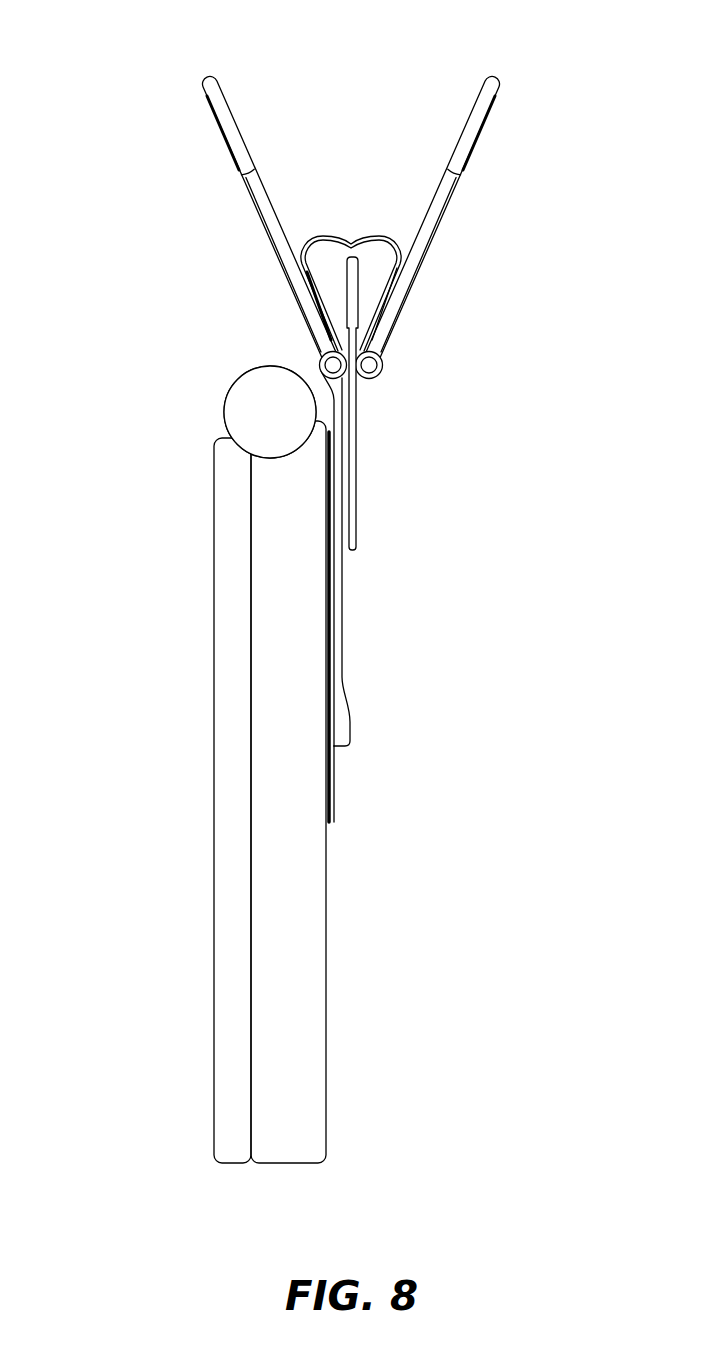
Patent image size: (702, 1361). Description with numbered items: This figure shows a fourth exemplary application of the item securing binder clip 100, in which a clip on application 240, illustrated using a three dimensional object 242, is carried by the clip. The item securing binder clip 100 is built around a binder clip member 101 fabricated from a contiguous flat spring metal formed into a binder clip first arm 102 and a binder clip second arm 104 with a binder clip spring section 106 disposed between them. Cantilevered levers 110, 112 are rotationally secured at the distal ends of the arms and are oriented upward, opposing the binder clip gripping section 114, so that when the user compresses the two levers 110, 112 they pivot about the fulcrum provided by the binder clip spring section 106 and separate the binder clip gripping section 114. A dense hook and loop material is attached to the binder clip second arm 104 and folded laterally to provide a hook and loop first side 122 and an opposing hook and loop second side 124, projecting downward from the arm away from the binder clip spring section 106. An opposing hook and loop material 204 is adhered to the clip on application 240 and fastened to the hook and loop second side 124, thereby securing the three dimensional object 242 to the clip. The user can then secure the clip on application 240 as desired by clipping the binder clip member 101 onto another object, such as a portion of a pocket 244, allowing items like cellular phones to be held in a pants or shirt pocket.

The item securing binder clip 100 is at (441, 97).
The binder clip member 101 is at (462, 218).
The binder clip first arm 102 is at (388, 308).
The binder clip second arm 104 is at (310, 313).
The binder clip spring section 106 is at (353, 232).
The cantilevered lever 110 is at (470, 140).
The cantilevered lever 112 is at (232, 140).
The binder clip gripping section 114 is at (366, 386).
The hook and loop first side 122 is at (348, 645).
The hook and loop second side 124 is at (322, 645).
The opposing hook and loop material 204 is at (332, 790).
The clip on application 240 is at (177, 1133).
The three dimensional object 242 is at (295, 1022).
The pocket 244 is at (352, 468).